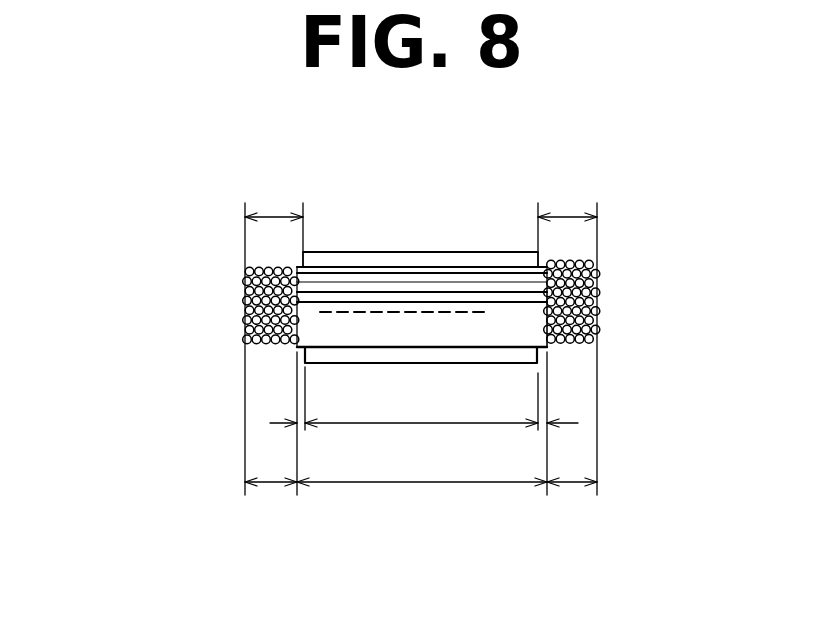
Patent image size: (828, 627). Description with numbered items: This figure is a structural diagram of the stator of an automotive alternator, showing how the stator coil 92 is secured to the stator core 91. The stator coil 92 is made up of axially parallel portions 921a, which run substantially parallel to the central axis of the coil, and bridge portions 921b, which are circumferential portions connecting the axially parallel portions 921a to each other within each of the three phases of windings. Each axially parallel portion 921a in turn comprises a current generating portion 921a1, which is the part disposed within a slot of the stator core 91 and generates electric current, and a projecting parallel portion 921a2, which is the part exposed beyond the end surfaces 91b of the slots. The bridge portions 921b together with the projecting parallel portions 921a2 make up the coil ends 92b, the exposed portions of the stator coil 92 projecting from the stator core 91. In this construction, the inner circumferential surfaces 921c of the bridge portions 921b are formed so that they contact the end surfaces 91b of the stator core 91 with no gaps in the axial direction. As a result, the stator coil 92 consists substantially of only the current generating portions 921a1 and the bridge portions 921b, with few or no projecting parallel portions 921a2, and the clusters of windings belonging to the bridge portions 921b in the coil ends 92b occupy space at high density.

The stator core 91 is at (382, 260).
The end surfaces 91b is at (540, 262).
The stator coil 92 is at (247, 317).
The coil ends 92b is at (421, 330).
The inner circumferential surfaces 921c is at (538, 343).
The axially parallel portions 921a is at (422, 423).
The current generating portions 921a1 is at (421, 398).
The projecting parallel portions 921a2 is at (300, 413).
The bridge portions 921b is at (277, 478).